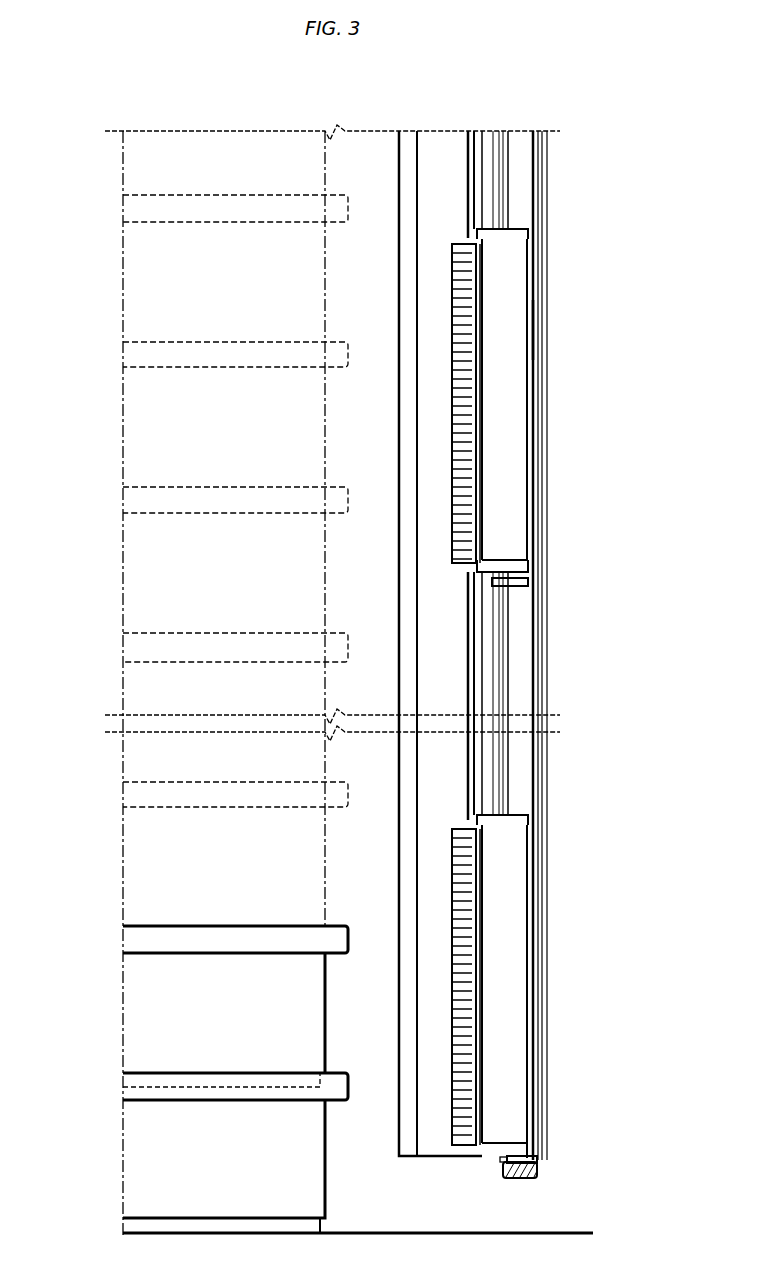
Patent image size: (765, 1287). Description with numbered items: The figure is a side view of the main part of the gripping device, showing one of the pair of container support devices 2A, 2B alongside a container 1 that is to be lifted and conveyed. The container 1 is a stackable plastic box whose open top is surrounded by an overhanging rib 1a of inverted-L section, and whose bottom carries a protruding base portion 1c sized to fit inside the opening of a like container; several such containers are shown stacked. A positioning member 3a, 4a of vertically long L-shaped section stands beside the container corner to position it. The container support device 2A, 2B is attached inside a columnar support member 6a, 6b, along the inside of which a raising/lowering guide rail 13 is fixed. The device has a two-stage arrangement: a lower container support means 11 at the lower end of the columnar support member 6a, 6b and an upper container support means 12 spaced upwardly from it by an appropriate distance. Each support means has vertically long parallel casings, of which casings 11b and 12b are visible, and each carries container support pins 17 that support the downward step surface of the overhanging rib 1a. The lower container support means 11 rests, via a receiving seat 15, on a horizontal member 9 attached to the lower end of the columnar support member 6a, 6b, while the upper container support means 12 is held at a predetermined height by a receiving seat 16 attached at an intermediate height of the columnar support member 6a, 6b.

The article conveying container 1 is at (148, 427).
The overhanging rib 1a is at (143, 355).
The protruding base portion 1c is at (242, 1070).
The positioning member 3a is at (399, 168).
The positioning member 4a is at (357, 621).
The columnar support member 6a is at (522, 187).
The columnar support member 6b is at (594, 645).
The container support device 2A is at (542, 337).
The container support device 2B is at (613, 315).
The horizontal member 9 is at (537, 1172).
The lower container support means 11 is at (533, 875).
The parallel casing 11b is at (500, 960).
The upper container support means 12 is at (513, 422).
The parallel casing 12b is at (513, 473).
The raising/lowering guide rail 13 is at (507, 165).
The receiving seat 15 is at (517, 1157).
The receiving seat 16 is at (513, 575).
The container support pin 17 is at (452, 327).